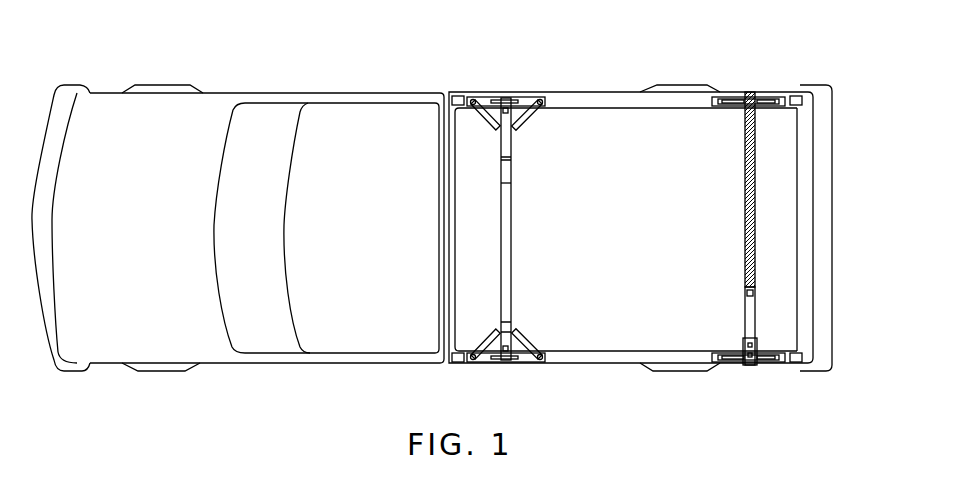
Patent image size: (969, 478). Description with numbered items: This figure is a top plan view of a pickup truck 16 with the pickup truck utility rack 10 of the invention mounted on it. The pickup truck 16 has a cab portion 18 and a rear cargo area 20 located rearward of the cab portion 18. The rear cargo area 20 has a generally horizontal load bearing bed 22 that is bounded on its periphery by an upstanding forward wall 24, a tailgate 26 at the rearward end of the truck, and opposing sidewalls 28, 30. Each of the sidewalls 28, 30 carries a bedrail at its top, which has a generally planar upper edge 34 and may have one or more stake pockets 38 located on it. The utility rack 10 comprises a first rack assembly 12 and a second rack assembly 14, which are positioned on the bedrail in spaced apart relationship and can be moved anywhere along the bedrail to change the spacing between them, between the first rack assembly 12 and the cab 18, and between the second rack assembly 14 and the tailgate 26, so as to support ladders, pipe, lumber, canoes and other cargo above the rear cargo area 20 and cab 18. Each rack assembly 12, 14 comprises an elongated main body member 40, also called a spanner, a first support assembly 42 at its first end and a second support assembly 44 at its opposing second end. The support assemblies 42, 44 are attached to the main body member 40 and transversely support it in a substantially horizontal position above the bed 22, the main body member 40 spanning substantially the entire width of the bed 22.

The pickup truck utility rack 10 is at (702, 45).
The first rack assembly 12 is at (497, 309).
The second rack assembly 14 is at (758, 257).
The pickup truck 16 is at (230, 91).
The cab portion 18 is at (333, 313).
The rear cargo area 20 is at (617, 100).
The load bearing bed 22 is at (678, 320).
The forward wall 24 is at (447, 137).
The tailgate 26 is at (804, 198).
The sidewall 28 is at (559, 98).
The sidewall 30 is at (584, 359).
The upper edge 34 is at (655, 100).
The stake pocket 38 is at (462, 363).
The main body member 40 is at (506, 183).
The first support assembly 42 is at (523, 364).
The second support assembly 44 is at (493, 100).